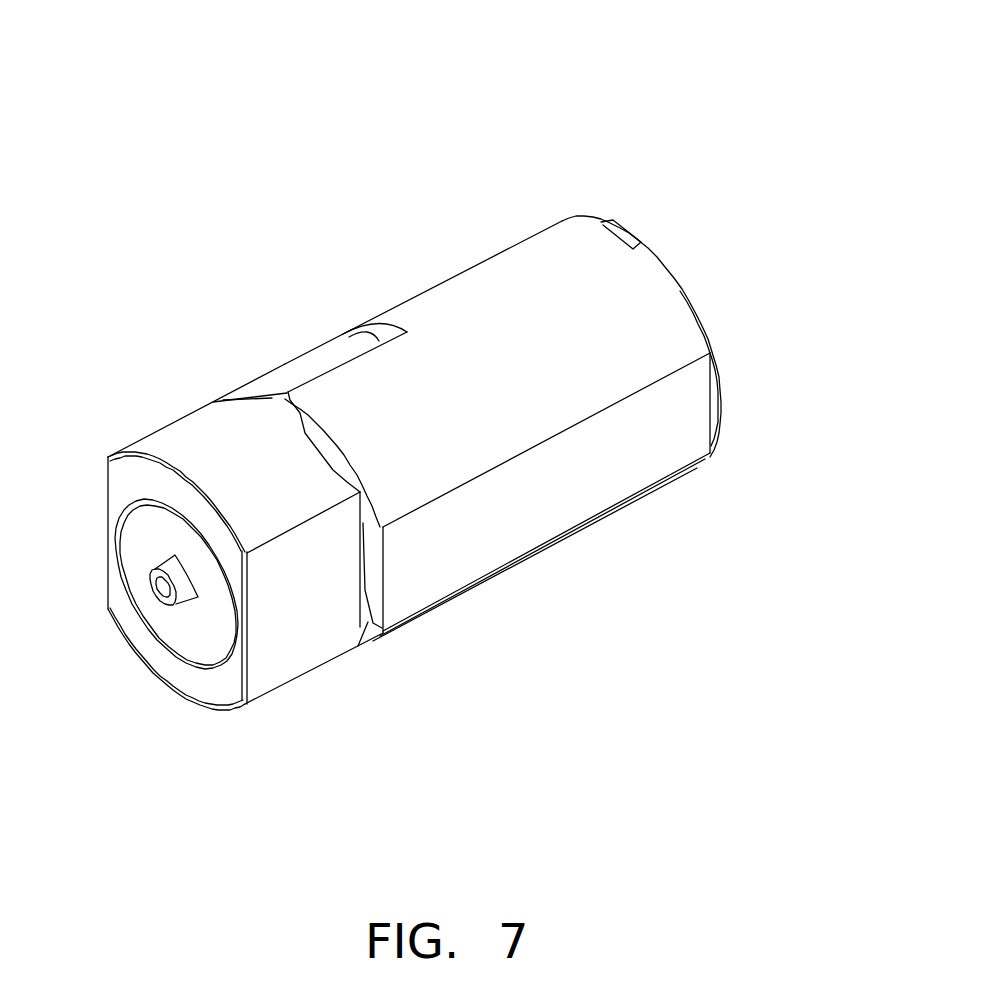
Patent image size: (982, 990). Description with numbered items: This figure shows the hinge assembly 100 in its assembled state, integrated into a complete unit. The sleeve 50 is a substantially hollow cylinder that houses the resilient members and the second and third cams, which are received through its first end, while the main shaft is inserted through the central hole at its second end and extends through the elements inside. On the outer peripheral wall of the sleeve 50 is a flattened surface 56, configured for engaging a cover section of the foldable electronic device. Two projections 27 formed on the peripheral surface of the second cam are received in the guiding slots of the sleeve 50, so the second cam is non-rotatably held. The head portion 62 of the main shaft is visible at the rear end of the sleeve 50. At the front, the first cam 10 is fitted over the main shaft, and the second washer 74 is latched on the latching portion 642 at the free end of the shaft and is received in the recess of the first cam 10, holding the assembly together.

The hinge assembly 100 is at (318, 76).
The first cam 10 is at (182, 435).
The projections 27 is at (320, 360).
The sleeve 50 is at (510, 282).
The flattened surface 56 is at (618, 505).
The head portion 62 is at (719, 380).
The second washer 74 is at (148, 528).
The latching portion 642 is at (188, 588).